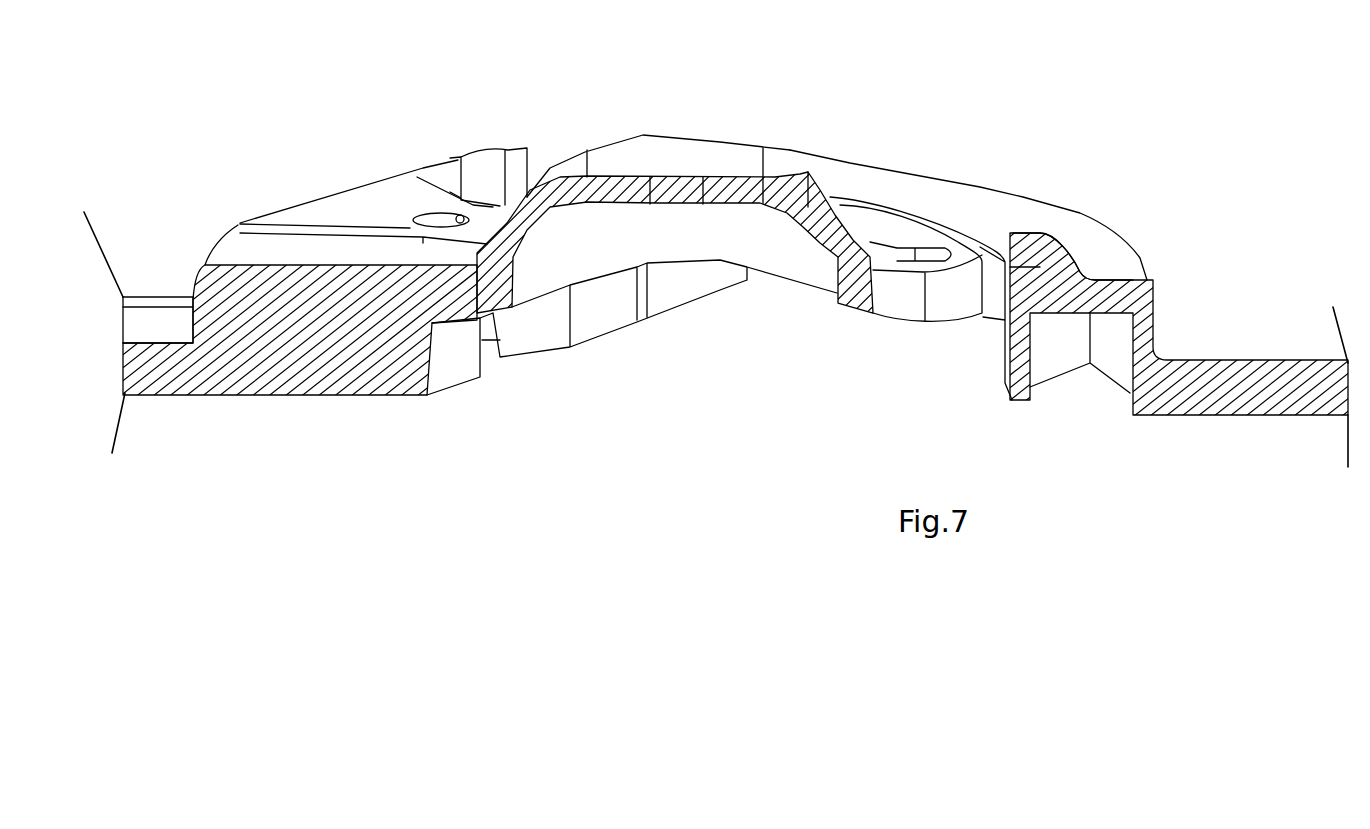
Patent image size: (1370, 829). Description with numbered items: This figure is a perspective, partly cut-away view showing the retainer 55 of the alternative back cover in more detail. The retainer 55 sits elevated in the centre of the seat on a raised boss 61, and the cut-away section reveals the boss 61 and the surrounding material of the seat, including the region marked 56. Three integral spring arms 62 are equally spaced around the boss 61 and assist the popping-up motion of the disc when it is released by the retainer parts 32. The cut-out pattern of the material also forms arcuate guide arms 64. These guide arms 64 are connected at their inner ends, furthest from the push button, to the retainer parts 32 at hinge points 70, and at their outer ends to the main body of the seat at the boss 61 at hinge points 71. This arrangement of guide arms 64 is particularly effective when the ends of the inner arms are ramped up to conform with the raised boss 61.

The retainer parts 32 is at (792, 150).
The retainer 55 is at (551, 133).
The groove 56 is at (152, 337).
The raised boss 61 is at (1023, 197).
The spring arms 62 is at (1047, 280).
The arcuate guide arms 64 is at (893, 232).
The hinge points 70 is at (897, 300).
The hinge points 71 is at (373, 233).